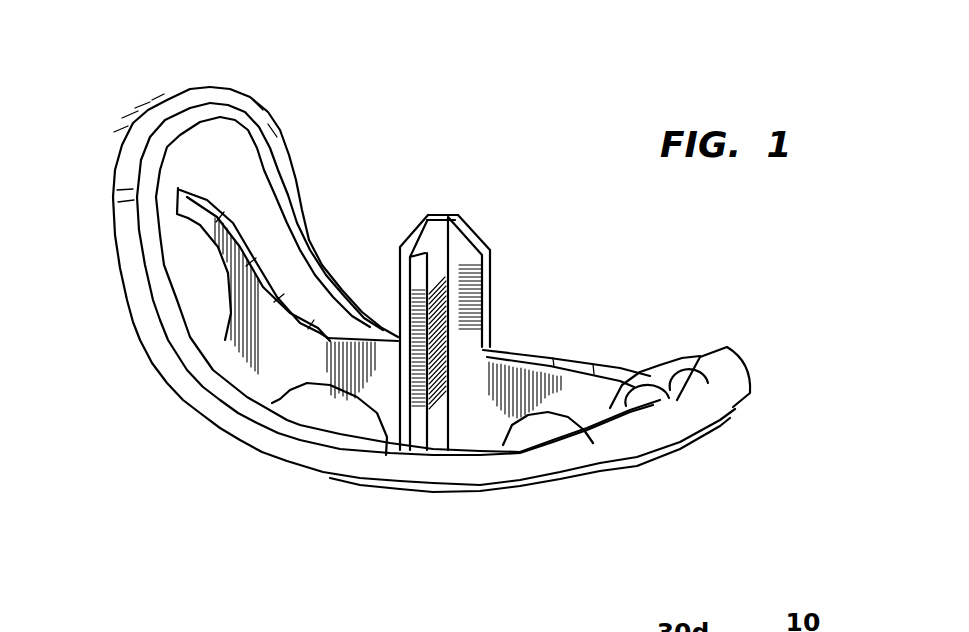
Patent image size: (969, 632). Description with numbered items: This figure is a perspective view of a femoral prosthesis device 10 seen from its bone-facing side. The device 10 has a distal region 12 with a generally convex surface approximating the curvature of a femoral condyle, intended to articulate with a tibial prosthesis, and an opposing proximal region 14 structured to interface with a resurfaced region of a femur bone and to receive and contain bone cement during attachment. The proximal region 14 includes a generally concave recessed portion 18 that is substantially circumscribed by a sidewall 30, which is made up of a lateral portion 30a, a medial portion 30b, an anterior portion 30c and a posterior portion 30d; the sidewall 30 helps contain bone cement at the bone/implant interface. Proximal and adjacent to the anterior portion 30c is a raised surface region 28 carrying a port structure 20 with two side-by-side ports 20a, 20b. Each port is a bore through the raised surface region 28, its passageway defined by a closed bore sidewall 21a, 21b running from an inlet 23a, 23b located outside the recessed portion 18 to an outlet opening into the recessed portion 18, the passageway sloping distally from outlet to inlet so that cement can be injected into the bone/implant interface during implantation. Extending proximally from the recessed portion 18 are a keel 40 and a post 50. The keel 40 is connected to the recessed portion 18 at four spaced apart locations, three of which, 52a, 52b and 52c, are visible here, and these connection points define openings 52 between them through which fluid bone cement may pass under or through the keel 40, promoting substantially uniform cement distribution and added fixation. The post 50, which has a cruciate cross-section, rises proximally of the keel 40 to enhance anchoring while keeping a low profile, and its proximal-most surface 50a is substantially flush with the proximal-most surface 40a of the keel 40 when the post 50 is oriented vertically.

The prosthesis device 10 is at (493, 93).
The distal region 12 is at (637, 463).
The proximal region 14 is at (237, 163).
The recessed portion 18 is at (183, 133).
The port structure 20 is at (687, 377).
The port 20a is at (683, 392).
The port 20b is at (733, 407).
The closed bore sidewall 21a is at (647, 380).
The closed bore sidewall 21b is at (667, 367).
The inlet 23a is at (625, 392).
The inlet 23b is at (690, 408).
The raised surface region 28 is at (675, 373).
The sidewall 30 is at (303, 190).
The lateral portion 30a is at (330, 295).
The medial portion 30b is at (240, 400).
The anterior portion 30c is at (740, 383).
The posterior portion 30d is at (208, 97).
The keel 40 is at (530, 353).
The proximal-most surface of the keel 40a is at (207, 190).
The post 50 is at (483, 223).
The proximal-most surface of the post 50a is at (437, 213).
The opening 52 is at (200, 263).
The connection location 52a is at (177, 200).
The connection location 52b is at (238, 344).
The connection location 52c is at (395, 437).